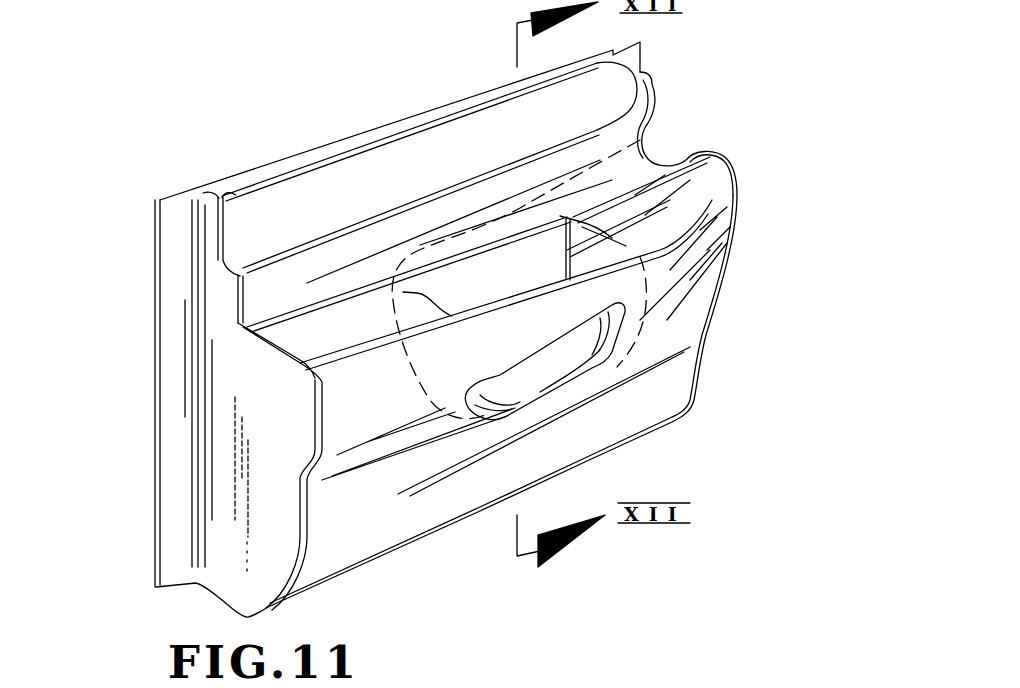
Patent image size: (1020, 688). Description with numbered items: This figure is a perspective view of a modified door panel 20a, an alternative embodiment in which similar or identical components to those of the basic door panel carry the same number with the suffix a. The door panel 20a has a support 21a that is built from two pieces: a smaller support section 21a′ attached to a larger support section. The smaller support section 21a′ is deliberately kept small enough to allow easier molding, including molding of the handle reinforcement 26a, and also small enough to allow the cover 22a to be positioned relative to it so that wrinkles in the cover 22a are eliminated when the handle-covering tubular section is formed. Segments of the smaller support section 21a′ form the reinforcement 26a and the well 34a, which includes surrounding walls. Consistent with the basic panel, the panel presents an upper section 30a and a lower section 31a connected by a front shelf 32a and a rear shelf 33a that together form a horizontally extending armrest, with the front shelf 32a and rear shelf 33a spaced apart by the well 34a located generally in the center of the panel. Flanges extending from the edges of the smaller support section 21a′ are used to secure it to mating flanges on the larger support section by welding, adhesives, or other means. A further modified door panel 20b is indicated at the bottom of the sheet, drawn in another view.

The door panel 20a is at (667, 66).
The second tray member 20b is at (697, 680).
The support 21a is at (150, 290).
The smaller support section 21a′ is at (645, 140).
The cover 22a is at (158, 392).
The handle reinforcement 26a is at (525, 353).
The upper section 30a is at (318, 229).
The lower section 31a is at (378, 513).
The front shelf 32a is at (358, 349).
The rear shelf 33a is at (733, 170).
The well 34a is at (512, 293).